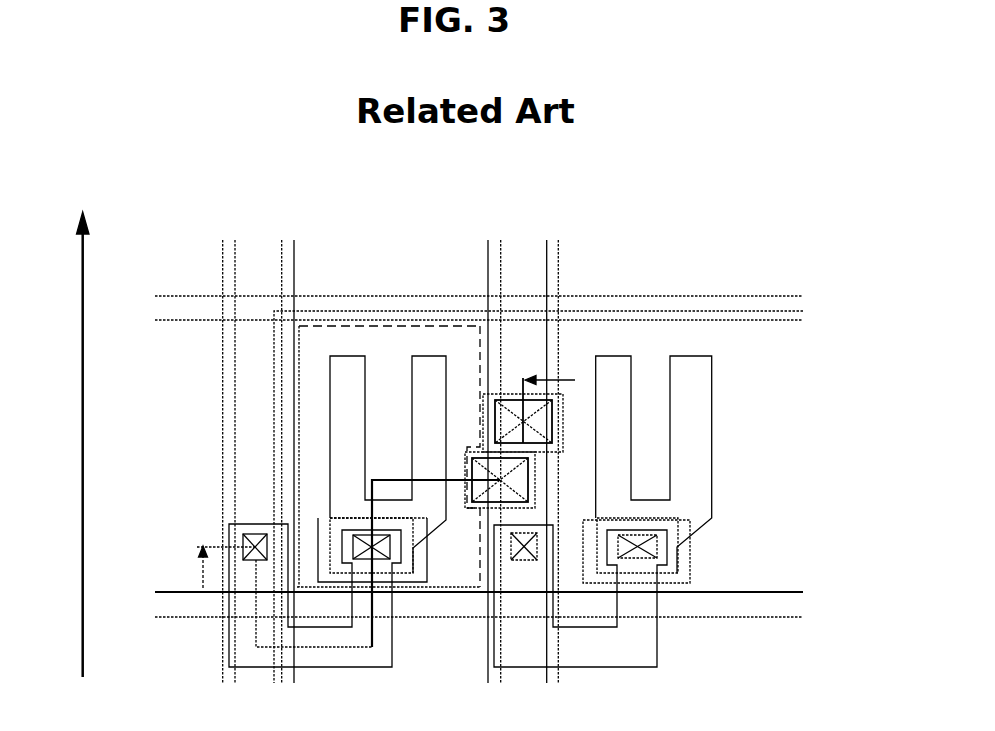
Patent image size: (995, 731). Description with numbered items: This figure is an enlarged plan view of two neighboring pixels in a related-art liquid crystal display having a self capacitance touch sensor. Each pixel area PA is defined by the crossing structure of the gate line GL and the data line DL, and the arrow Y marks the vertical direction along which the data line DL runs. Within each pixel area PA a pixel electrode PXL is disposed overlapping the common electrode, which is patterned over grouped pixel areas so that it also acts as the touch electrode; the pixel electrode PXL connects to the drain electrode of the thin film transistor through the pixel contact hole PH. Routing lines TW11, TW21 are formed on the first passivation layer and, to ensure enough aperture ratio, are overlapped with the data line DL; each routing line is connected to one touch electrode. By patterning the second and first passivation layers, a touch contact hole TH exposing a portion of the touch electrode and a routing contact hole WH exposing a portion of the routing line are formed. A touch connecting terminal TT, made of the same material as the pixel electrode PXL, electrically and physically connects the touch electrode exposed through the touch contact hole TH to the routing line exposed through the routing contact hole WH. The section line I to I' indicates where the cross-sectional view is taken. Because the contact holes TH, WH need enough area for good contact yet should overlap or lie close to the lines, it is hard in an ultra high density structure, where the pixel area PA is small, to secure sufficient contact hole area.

The routing line TW11 is at (294, 248).
The routing line TW21 is at (559, 248).
The data line DL is at (282, 288).
The gate line GL is at (178, 320).
The touch connecting terminal TT is at (483, 395).
The routing contact hole WH is at (502, 395).
The touch contact hole TH is at (479, 513).
The pixel contact hole PH is at (653, 553).
The pixel electrode PXL is at (708, 388).
The pixel area PA is at (465, 590).
The section line I is at (219, 567).
The section line I' is at (550, 373).
The Y direction Y is at (82, 432).